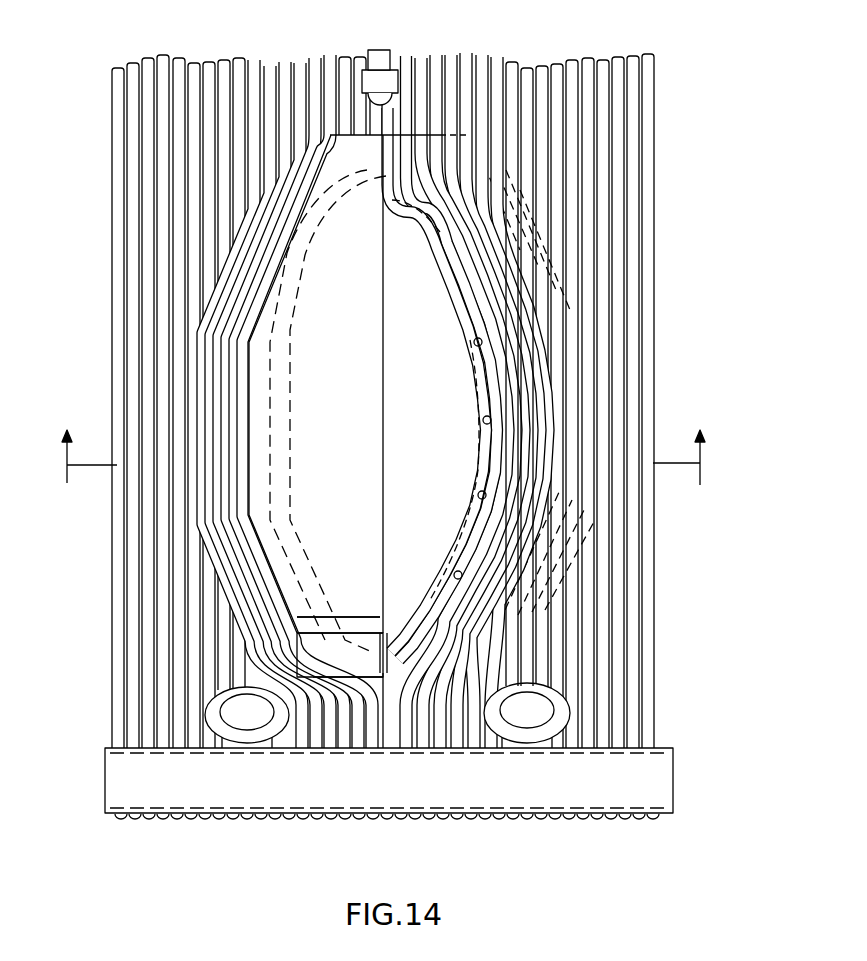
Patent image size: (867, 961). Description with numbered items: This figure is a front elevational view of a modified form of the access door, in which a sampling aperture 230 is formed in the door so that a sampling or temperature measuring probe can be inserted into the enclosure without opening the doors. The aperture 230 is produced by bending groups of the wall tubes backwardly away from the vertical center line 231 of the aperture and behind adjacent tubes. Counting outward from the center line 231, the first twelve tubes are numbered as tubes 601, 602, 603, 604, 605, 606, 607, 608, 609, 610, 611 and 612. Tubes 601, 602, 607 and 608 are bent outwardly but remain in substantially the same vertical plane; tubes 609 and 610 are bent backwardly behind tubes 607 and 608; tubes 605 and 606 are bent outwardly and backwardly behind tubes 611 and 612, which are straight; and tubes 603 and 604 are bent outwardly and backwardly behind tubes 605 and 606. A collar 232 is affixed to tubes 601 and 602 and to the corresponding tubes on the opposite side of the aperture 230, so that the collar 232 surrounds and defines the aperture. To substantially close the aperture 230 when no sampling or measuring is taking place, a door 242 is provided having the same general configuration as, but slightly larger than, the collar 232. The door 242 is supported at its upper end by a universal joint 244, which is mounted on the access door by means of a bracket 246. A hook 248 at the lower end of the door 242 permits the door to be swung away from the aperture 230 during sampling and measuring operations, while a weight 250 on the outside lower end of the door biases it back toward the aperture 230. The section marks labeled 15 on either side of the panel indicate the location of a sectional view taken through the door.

The sampling aperture 230 is at (358, 360).
The vertical center line 231 is at (384, 390).
The collar 232 is at (300, 503).
The door 242 is at (255, 502).
The universal joint 244 is at (391, 80).
The bracket 246 is at (381, 50).
The hook 248 is at (443, 358).
The weight 250 is at (347, 668).
The tube 601 is at (398, 740).
The tube 602 is at (413, 742).
The tube 603 is at (430, 745).
The tube 604 is at (447, 745).
The tube 605 is at (465, 745).
The tube 606 is at (480, 745).
The tube 607 is at (490, 715).
The tube 608 is at (507, 683).
The tube 609 is at (538, 697).
The tube 610 is at (542, 668).
The tube 611 is at (548, 655).
The tube 612 is at (567, 630).
The section line 15- 15 is at (386, 470).